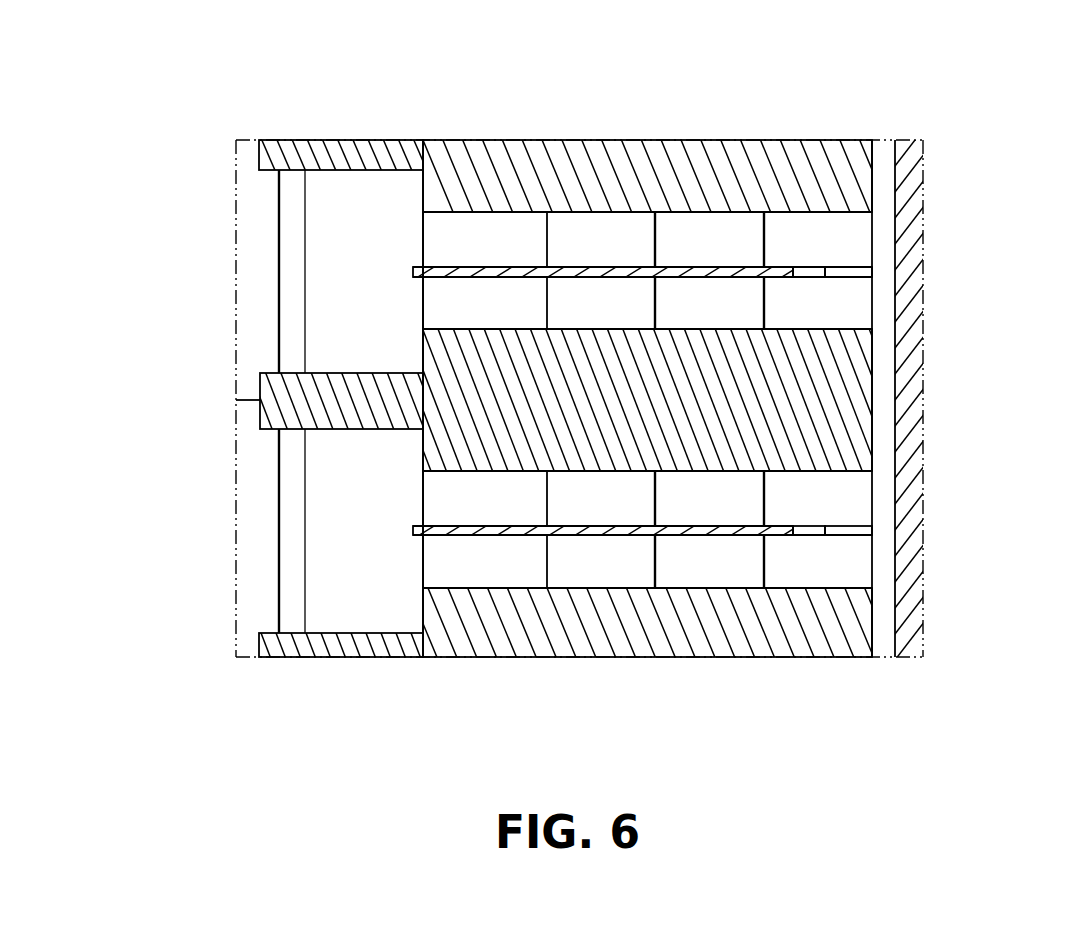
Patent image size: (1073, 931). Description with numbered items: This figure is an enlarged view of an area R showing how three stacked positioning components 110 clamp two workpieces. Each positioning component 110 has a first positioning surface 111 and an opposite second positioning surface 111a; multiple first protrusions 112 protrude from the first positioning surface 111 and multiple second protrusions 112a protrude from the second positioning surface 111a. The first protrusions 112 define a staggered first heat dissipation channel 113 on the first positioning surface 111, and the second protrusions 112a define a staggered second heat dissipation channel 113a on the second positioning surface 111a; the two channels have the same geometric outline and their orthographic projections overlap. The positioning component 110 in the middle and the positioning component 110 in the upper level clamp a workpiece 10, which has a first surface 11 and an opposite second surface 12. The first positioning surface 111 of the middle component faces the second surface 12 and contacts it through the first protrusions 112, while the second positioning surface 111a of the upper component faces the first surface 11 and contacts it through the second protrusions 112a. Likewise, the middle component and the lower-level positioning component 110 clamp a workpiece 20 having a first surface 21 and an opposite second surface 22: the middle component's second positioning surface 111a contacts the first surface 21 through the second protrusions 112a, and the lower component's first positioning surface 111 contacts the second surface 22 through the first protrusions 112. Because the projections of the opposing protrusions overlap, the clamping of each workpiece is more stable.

The area R is at (236, 162).
The workpiece 10 is at (778, 272).
The first surface 11 is at (577, 267).
The second surface 12 is at (732, 280).
The workpiece 20 is at (567, 528).
The first surface 21 is at (510, 524).
The second surface 22 is at (730, 535).
The positioning component 110 is at (662, 162).
The first positioning surface 111 is at (830, 330).
The second positioning surface 111a is at (837, 213).
The first protrusions 112 is at (502, 297).
The second protrusions 112a is at (458, 230).
The first heat dissipation channel 113 is at (637, 300).
The second heat dissipation channel 113a is at (601, 233).